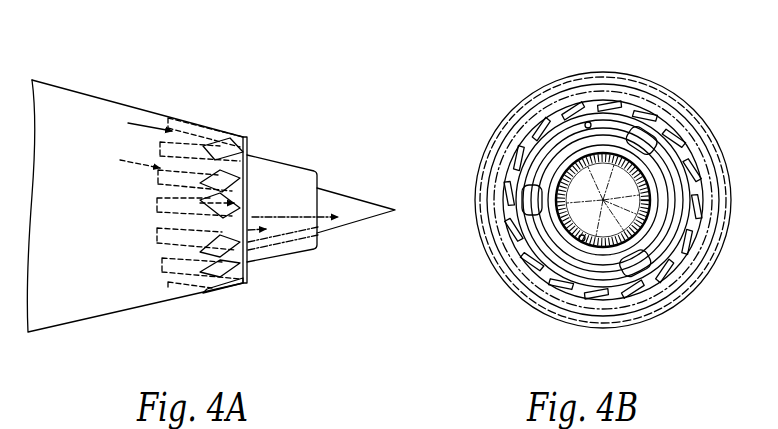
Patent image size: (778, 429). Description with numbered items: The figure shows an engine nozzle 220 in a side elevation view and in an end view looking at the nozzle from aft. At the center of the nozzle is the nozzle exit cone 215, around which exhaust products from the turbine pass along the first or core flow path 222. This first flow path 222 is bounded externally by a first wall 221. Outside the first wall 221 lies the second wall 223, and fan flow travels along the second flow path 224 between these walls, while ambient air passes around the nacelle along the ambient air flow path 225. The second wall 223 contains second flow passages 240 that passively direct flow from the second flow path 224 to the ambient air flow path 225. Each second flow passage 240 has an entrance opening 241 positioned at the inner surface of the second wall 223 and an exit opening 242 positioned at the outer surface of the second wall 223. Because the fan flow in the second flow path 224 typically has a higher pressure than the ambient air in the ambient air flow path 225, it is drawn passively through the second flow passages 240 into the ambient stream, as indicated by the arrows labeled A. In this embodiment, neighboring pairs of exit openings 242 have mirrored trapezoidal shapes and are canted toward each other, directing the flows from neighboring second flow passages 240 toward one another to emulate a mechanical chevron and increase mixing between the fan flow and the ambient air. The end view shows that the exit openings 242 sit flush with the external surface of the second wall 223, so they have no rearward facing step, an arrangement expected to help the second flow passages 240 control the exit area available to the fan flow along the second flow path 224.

In FIG. 4A, the nozzle exit cone 215 is at (362, 225).
In FIG. 4B, the nozzle exit cone 215 is at (615, 228).
In FIG. 4A, the nozzle 220 is at (201, 76).
In FIG. 4B, the nozzle 220 is at (472, 126).
In FIG. 4A, the first wall 221 is at (293, 175).
In FIG. 4B, the first wall 221 is at (660, 218).
In FIG. 4A, the first flow path 222 is at (325, 220).
In FIG. 4B, the first flow path 222 is at (579, 241).
In FIG. 4A, the second wall 223 is at (199, 122).
In FIG. 4B, the second wall 223 is at (625, 102).
In FIG. 4A, the second flow path 224 is at (252, 232).
In FIG. 4B, the second flow path 224 is at (588, 122).
In FIG. 4A, the ambient air flow path 225 is at (150, 128).
In FIG. 4B, the ambient air flow path 225 is at (693, 92).
In FIG. 4A, the second flow passages 240 is at (200, 203).
In FIG. 4A, the entrance opening 241 is at (120, 160).
In FIG. 4A, the exit opening 242 is at (245, 157).
In FIG. 4B, the exit opening 242 is at (538, 135).